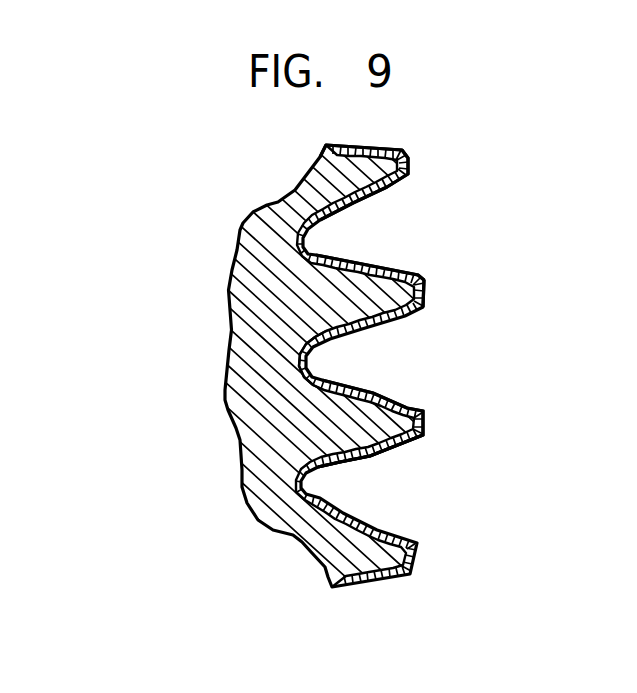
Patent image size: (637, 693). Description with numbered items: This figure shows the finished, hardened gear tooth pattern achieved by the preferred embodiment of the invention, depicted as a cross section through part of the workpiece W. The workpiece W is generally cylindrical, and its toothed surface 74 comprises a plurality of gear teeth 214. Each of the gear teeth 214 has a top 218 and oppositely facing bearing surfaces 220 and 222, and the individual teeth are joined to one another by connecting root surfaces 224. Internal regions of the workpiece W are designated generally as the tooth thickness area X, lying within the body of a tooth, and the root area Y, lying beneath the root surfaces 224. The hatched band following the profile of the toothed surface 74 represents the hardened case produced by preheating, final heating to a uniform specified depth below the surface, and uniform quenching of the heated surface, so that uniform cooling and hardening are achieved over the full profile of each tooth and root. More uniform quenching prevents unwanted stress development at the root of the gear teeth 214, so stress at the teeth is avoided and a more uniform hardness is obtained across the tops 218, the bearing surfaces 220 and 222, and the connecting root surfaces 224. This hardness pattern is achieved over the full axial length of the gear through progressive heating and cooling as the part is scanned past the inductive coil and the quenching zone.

The toothed surface 74 is at (417, 163).
The gear teeth 214 is at (395, 268).
The workpiece W is at (437, 289).
The connecting root surfaces 224 is at (318, 352).
The bearing surface 220 is at (403, 398).
The tops 218 is at (424, 423).
The bearing surface 222 is at (383, 457).
The tooth thickness area X is at (369, 436).
The root area Y is at (264, 435).